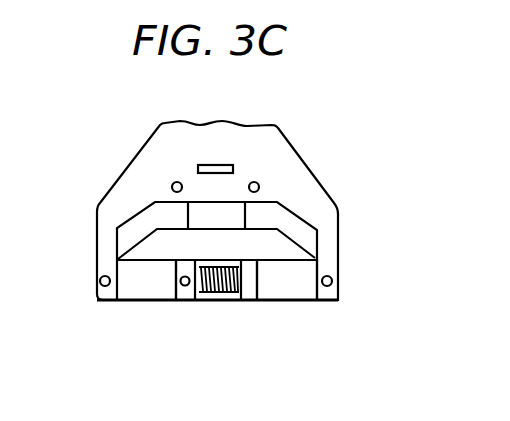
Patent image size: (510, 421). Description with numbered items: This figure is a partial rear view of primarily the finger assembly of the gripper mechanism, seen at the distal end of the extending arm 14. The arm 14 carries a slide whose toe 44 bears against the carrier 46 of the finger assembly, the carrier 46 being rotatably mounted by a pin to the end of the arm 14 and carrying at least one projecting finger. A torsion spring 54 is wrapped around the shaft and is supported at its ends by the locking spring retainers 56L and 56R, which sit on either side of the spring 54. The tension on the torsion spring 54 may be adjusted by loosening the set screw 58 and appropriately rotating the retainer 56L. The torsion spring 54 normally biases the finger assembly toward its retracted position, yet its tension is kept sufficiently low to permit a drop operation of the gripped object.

The arm 14 is at (298, 152).
The toe 44 is at (292, 240).
The carrier 46 is at (304, 301).
The torsion spring 54 is at (222, 300).
The locking spring retainer 56L is at (182, 300).
The locking spring retainer 56R is at (242, 300).
The set screw 58 is at (178, 283).